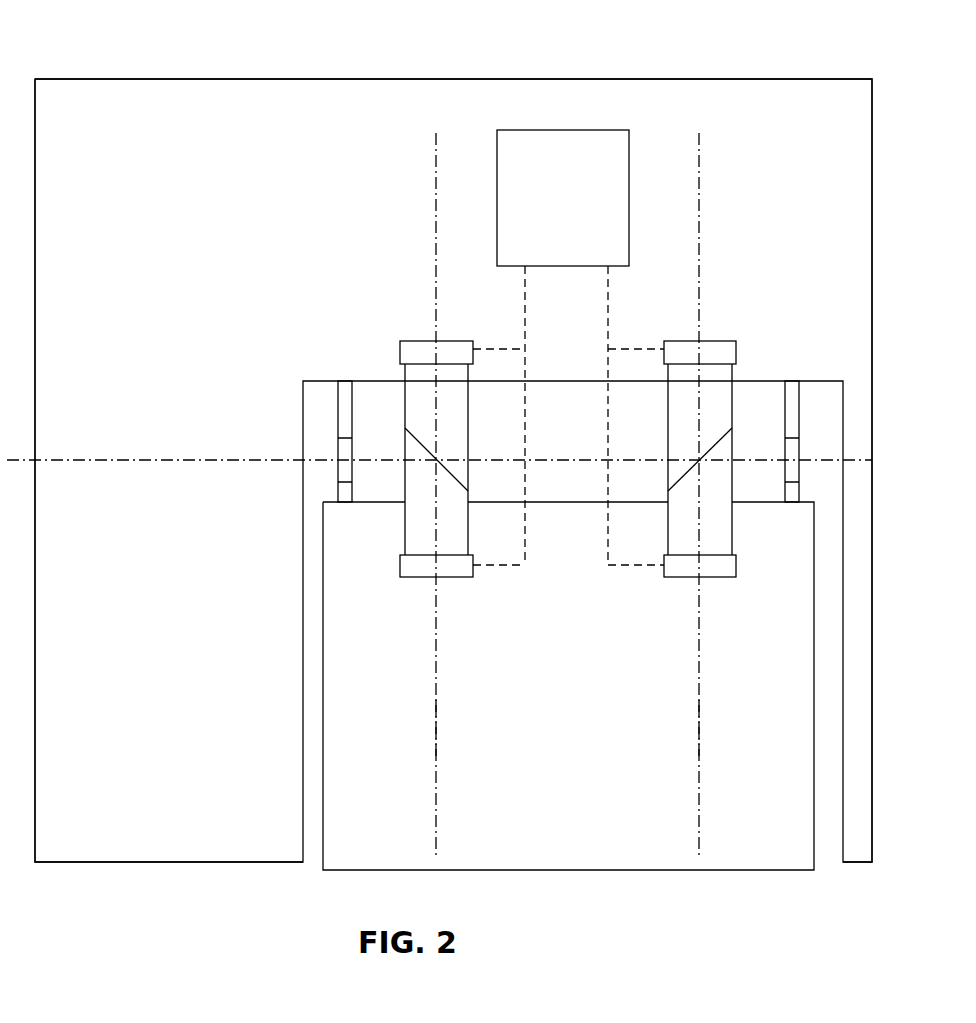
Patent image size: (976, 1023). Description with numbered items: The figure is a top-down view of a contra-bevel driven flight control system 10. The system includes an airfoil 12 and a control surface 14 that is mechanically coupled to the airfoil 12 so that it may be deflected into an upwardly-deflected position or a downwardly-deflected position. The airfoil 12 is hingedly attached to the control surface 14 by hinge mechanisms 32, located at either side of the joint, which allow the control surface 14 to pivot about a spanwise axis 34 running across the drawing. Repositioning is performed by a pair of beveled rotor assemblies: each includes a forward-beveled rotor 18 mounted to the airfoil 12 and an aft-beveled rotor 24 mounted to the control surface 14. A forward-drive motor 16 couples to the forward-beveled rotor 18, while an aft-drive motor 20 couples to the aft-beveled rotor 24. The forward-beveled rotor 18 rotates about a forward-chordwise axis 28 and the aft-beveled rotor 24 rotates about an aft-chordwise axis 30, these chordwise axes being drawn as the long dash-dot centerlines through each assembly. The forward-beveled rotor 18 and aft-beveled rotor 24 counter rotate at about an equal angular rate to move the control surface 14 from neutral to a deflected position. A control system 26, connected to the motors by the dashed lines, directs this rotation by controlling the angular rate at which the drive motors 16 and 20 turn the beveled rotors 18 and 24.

The contra-bevel driven flight control system 10 is at (362, 58).
The airfoil 12 is at (453, 470).
The control surface 14 is at (568, 686).
The forward-drive motor 16 is at (405, 340).
The forward-beveled rotor 18 is at (568, 459).
The aft-drive motor 20 is at (400, 566).
The aft-beveled rotor 24 is at (568, 464).
The control system 26 is at (568, 347).
The forward-chordwise axis 28 is at (434, 180).
The aft-chordwise axis 30 is at (437, 750).
The hinge mechanism 32 is at (352, 445).
The spanwise axis 34 is at (97, 460).